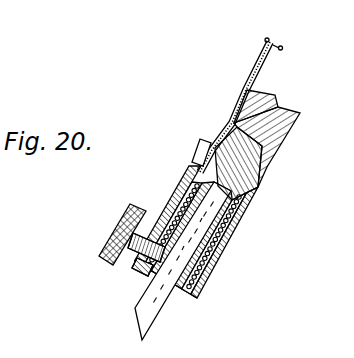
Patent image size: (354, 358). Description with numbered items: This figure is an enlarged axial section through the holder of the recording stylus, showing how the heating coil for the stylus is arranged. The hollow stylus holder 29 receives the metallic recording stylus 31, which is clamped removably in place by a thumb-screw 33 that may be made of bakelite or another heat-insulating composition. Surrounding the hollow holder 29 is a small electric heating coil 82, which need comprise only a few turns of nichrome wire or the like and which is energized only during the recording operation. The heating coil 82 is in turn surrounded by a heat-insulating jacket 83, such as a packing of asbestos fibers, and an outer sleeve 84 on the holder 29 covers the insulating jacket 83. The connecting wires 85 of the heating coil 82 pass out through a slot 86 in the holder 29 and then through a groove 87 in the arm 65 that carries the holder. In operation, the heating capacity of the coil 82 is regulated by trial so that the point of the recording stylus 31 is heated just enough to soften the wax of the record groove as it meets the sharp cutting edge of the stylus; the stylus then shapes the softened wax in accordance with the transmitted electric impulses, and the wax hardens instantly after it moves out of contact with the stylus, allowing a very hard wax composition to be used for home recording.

The hollow stylus holder 29 is at (240, 158).
The recording stylus 31 is at (140, 311).
The thumb-screw 33 is at (138, 205).
The arm 65 is at (294, 118).
The heating coil 82 is at (188, 183).
The heat-insulating jacket 83 is at (230, 237).
The outer sleeve 84 is at (224, 253).
The connecting wires 85 is at (272, 60).
The slot 86 is at (200, 152).
The groove 87 is at (279, 104).